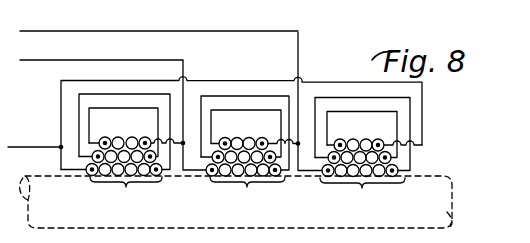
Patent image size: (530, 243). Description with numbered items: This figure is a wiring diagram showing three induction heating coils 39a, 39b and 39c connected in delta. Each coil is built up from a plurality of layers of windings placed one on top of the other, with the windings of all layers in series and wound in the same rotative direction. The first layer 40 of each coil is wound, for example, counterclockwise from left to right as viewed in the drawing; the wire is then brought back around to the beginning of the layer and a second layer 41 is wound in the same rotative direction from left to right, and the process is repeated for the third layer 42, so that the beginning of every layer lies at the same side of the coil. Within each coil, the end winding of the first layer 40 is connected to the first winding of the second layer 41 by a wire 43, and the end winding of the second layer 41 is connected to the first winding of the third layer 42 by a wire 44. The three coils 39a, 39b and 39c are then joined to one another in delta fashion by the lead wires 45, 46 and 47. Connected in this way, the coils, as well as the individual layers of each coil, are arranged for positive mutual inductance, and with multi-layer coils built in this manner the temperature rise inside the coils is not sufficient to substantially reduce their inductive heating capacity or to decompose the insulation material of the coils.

The lead wire 47 is at (256, 32).
The lead wire 45 is at (118, 60).
The lead wire 46 is at (45, 124).
The wire 43 is at (118, 93).
The wire 44 is at (116, 109).
The third layer 42 is at (122, 124).
The second layer 41 is at (108, 157).
The first layer 40 is at (115, 171).
The coil 39a is at (126, 193).
The coil 39b is at (247, 193).
The coil 39c is at (362, 195).